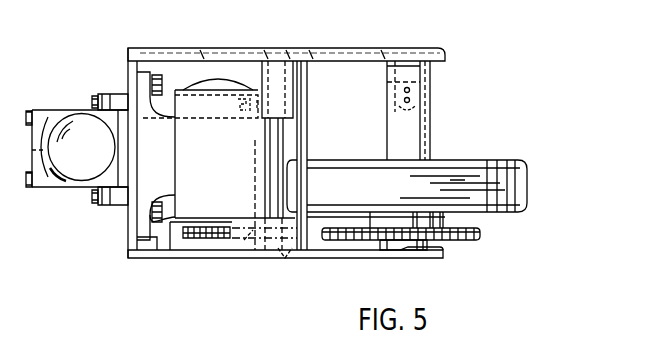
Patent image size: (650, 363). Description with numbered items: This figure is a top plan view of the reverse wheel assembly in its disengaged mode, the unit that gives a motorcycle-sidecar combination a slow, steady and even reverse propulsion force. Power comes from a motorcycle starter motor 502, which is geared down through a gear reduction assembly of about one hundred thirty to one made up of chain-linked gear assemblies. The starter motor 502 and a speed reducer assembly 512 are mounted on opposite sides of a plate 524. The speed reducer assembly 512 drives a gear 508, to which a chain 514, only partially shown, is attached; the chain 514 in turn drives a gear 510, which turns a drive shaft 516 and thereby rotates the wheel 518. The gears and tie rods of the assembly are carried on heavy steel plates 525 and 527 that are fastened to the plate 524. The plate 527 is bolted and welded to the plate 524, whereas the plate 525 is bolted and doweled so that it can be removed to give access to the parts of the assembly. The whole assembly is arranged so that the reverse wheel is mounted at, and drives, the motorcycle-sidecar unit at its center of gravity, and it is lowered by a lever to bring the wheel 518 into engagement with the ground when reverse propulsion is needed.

The motorcycle starter motor 502 is at (78, 168).
The gear 508 is at (205, 239).
The gear 510 is at (473, 242).
The speed reducer assembly 512 is at (222, 77).
The chain 514 is at (236, 262).
The drive shaft 516 is at (413, 135).
The wheel 518 is at (460, 167).
The plate 524 is at (128, 67).
The heavy steel plate 525 is at (163, 258).
The heavy steel plate 527 is at (382, 53).